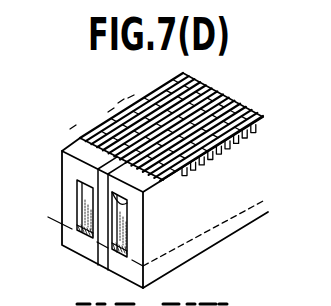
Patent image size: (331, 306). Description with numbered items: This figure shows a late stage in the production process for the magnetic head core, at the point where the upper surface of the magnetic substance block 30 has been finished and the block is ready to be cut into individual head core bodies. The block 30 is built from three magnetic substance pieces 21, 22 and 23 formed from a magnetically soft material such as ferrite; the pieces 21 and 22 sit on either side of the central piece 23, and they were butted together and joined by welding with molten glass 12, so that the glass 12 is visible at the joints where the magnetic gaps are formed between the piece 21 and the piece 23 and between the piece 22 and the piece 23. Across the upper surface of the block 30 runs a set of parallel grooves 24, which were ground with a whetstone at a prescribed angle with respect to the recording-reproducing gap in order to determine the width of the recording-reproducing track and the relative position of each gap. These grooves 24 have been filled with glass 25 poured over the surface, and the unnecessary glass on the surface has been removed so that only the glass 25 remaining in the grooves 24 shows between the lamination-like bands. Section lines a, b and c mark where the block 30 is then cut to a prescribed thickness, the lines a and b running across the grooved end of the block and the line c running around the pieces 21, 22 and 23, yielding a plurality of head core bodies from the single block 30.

The molten glass 12 is at (78, 186).
The magnetic substance piece 21 is at (67, 170).
The magnetic substance piece 22 is at (197, 245).
The magnetic substance piece 23 is at (100, 262).
The parallel grooves 24 is at (248, 128).
The glass 25 is at (80, 136).
The magnetic substance block 30 is at (252, 215).
The section line a is at (212, 162).
The section line b is at (233, 150).
The section line c is at (157, 223).